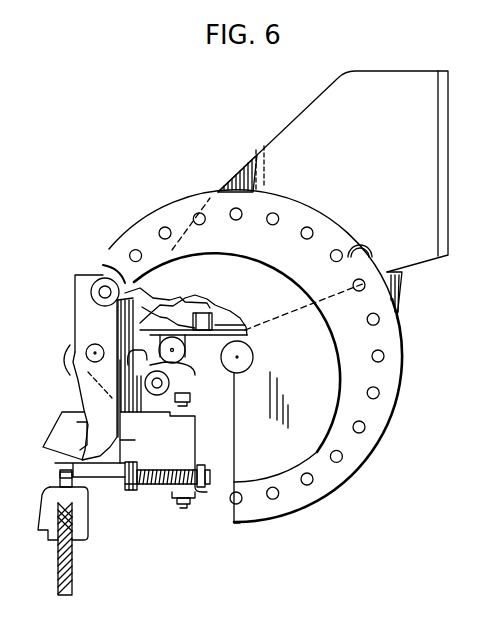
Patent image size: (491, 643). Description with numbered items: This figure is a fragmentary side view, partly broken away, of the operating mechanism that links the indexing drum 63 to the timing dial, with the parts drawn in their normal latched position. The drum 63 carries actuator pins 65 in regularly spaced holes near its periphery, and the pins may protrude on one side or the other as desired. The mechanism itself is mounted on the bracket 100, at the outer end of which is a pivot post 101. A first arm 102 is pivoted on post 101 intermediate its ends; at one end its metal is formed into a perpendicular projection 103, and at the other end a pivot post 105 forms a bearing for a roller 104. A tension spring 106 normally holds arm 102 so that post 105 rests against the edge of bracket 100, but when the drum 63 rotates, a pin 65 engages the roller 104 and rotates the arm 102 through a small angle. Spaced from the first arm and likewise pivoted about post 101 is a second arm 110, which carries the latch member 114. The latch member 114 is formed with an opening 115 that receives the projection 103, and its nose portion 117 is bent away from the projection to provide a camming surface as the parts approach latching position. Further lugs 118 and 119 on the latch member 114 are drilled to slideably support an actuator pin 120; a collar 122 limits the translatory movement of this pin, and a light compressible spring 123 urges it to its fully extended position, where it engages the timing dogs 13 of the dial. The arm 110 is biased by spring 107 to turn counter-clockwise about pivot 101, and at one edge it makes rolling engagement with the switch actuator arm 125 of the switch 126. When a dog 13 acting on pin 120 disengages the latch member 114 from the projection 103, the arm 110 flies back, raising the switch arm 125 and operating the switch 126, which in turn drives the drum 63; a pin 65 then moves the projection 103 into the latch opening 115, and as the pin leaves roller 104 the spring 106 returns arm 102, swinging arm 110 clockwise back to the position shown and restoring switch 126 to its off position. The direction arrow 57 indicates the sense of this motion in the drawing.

The timing dog 13 is at (55, 500).
The direction arrow 57 is at (68, 397).
The indexing drum 63 is at (310, 494).
The actuator pin 65 is at (273, 499).
The bracket 100 is at (278, 137).
The pivot post 101 is at (86, 353).
The arm 102 is at (75, 318).
The projection 103 is at (80, 464).
The roller 104 is at (91, 292).
The pivot post 105 is at (105, 299).
The tension spring 106 is at (110, 272).
The spring 107 is at (152, 352).
The second arm 110 is at (192, 390).
The latch member 114 is at (190, 451).
The opening 115 is at (125, 448).
The nose portion 117 is at (63, 432).
The lug 118 is at (203, 494).
The lug 119 is at (128, 486).
The actuator pin 120 is at (103, 478).
The collar 122 is at (155, 466).
The compressible spring 123 is at (153, 482).
The switch actuator arm 125 is at (185, 351).
The switch 126 is at (225, 312).